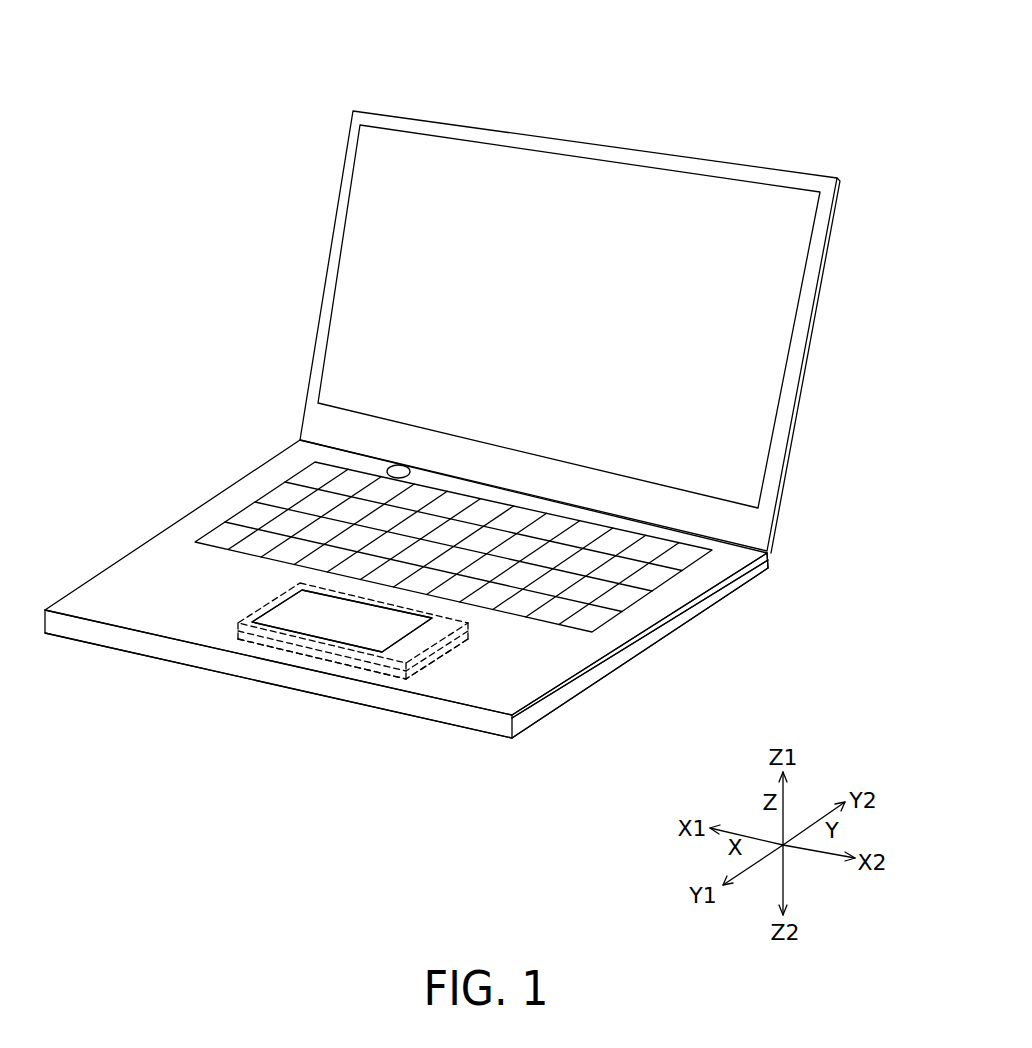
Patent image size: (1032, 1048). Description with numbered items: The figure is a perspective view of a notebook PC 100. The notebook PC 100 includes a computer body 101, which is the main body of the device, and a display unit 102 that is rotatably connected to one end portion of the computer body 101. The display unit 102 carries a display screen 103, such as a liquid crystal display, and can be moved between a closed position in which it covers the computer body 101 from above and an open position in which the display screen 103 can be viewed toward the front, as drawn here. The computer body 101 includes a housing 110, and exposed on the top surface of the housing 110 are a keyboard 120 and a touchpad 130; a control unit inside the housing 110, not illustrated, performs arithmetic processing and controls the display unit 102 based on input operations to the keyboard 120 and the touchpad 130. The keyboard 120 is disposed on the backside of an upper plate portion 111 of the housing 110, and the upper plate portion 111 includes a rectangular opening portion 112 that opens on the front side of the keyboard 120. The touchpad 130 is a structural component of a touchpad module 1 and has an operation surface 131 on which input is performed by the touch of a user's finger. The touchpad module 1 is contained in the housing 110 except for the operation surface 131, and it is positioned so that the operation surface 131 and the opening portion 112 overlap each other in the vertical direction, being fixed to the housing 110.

The notebook PC 100 is at (699, 115).
The display unit 102 is at (815, 172).
The display screen 103 is at (783, 285).
The computer body 101 is at (580, 697).
The housing 110 is at (642, 642).
The upper plate portion 111 is at (768, 566).
The keyboard 120 is at (668, 585).
The opening portion 112 is at (275, 612).
The touchpad 130 is at (380, 636).
The operation surface 131 is at (357, 629).
The touchpad module 1 is at (233, 634).